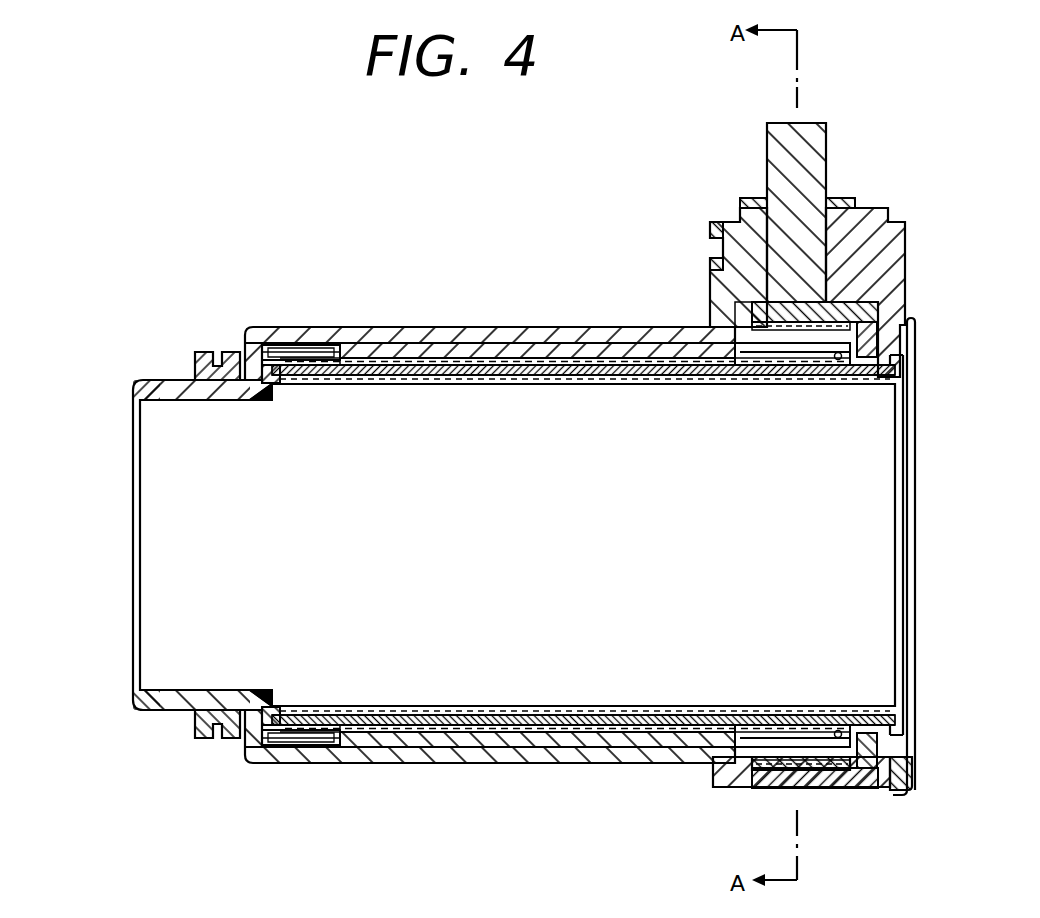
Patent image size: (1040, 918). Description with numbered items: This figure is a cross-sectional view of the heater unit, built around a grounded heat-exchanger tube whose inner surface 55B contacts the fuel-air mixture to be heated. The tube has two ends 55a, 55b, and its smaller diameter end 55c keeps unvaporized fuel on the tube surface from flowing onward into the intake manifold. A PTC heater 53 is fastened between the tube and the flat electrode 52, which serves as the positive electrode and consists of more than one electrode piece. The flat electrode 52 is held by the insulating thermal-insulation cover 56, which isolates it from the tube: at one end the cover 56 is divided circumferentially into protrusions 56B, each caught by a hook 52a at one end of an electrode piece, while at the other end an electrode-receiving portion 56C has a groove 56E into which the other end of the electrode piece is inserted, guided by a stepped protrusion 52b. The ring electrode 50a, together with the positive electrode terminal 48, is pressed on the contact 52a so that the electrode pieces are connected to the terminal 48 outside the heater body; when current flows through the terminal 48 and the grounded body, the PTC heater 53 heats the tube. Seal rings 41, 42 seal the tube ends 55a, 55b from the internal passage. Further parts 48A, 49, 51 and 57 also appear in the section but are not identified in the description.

The seal ring 41 is at (205, 350).
The seal ring 42 is at (712, 222).
The positive electrode terminal 48 is at (815, 122).
The pin head 48A is at (860, 305).
The insulating layer 49 is at (432, 343).
The ring electrode 50a is at (752, 301).
The connector body 51 is at (893, 215).
The flat electrode 52 is at (318, 346).
The hook 52a is at (866, 357).
The stepped protrusion 52b is at (310, 364).
The PTC heater 53 is at (600, 355).
The end of heat-exchanger tube 55a is at (133, 378).
The end of heat-exchanger tube 55b is at (895, 342).
The inner surface 55B is at (468, 383).
The smaller diameter end 55c is at (262, 397).
The insulating thermal-insulation cover 56 is at (378, 327).
The protrusion 56B is at (772, 350).
The electrode-receiving portion 56C is at (240, 346).
The groove 56E is at (277, 384).
The cap plate 57 is at (845, 200).